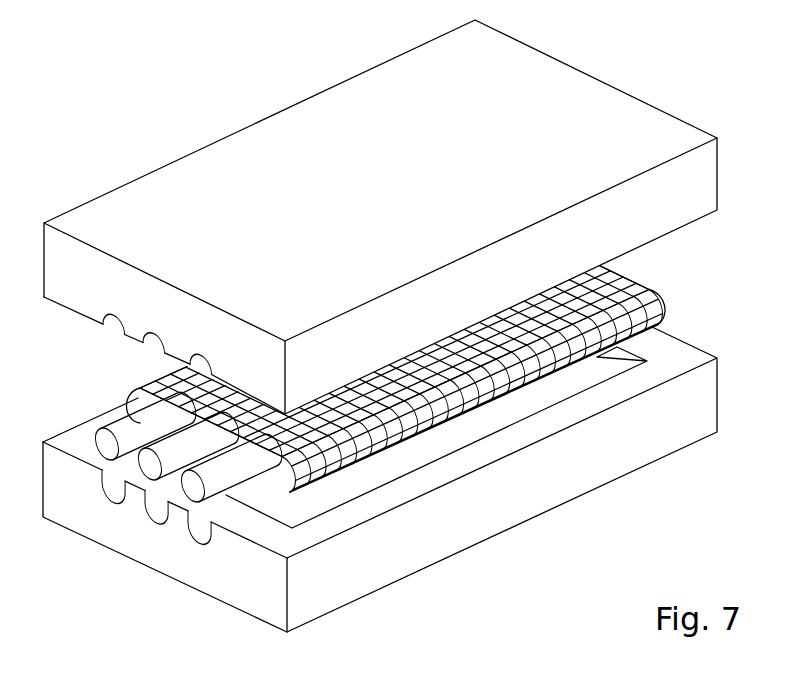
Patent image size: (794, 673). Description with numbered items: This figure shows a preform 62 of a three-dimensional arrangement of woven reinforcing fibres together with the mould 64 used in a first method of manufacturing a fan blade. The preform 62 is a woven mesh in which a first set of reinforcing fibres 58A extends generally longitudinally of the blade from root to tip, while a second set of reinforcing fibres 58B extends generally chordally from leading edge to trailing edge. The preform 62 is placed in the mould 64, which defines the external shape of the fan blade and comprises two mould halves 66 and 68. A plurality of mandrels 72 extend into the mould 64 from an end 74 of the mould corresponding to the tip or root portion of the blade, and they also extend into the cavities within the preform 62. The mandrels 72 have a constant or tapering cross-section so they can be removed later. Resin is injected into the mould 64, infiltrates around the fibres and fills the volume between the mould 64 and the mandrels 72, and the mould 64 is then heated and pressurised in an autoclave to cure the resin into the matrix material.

The mould half 68 is at (698, 210).
The mould half 66 is at (707, 392).
The end of the mould 74 is at (215, 578).
The mandrels 72 is at (102, 430).
The mould 64 is at (522, 503).
The preform 62 is at (432, 419).
The first set of reinforcing fibres 58A is at (367, 440).
The second set of reinforcing fibres 58B is at (437, 383).